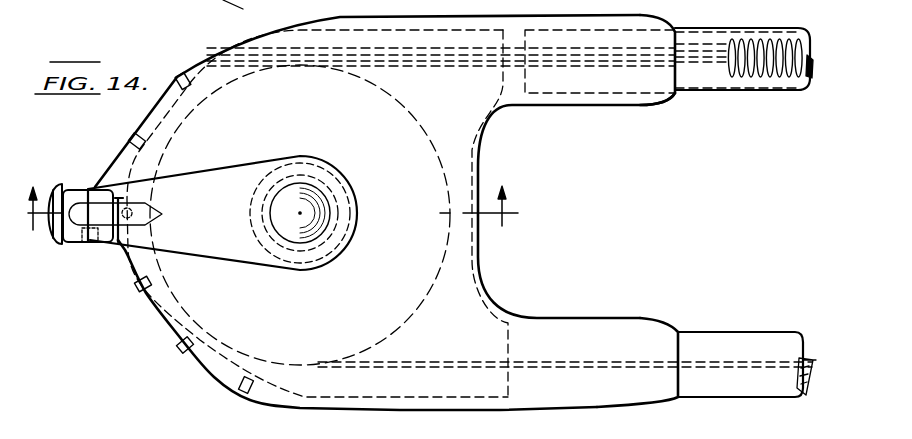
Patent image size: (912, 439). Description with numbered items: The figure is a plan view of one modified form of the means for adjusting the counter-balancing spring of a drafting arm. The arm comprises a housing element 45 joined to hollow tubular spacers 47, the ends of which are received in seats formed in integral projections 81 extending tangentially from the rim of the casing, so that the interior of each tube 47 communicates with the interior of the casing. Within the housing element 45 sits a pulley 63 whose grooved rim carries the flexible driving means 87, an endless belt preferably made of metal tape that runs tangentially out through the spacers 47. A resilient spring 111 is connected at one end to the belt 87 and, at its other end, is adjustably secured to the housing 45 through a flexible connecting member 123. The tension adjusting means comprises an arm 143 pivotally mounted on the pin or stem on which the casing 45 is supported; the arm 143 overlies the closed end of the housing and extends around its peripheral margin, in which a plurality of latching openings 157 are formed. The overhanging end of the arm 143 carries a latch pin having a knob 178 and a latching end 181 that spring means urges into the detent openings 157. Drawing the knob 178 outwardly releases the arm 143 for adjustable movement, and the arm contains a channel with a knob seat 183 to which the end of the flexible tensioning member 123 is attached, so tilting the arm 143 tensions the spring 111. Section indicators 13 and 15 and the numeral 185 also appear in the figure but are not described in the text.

The section line 13 is at (244, 7).
The section line arrow 15 is at (510, 245).
The housing element 45 is at (453, 289).
The tubular spacer 47 is at (758, 88).
The pulley 63 is at (430, 168).
The projection 81 is at (623, 100).
The flexible driving means 87 is at (722, 8).
The resilient spring 111 is at (763, 37).
The flexible connecting member 123 is at (115, 153).
The arm 143 is at (230, 173).
The latching openings 157 is at (178, 72).
The knob 178 is at (53, 183).
The latching end 181 is at (122, 260).
The knob seat 183 is at (97, 242).
The rod end 185 is at (630, 46).